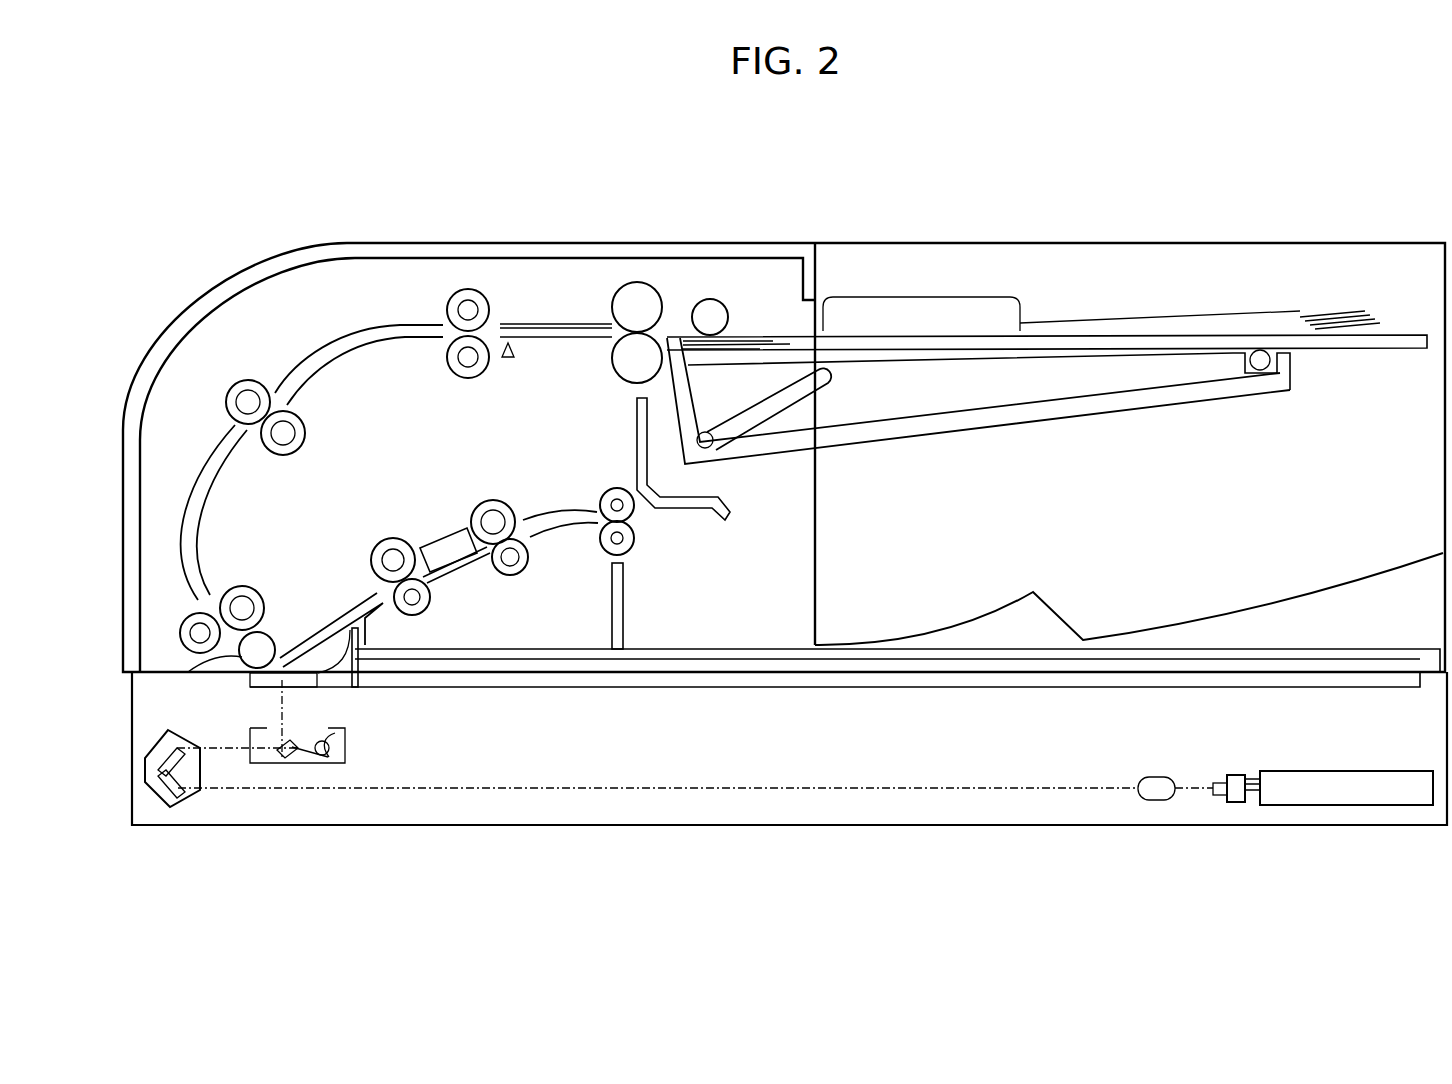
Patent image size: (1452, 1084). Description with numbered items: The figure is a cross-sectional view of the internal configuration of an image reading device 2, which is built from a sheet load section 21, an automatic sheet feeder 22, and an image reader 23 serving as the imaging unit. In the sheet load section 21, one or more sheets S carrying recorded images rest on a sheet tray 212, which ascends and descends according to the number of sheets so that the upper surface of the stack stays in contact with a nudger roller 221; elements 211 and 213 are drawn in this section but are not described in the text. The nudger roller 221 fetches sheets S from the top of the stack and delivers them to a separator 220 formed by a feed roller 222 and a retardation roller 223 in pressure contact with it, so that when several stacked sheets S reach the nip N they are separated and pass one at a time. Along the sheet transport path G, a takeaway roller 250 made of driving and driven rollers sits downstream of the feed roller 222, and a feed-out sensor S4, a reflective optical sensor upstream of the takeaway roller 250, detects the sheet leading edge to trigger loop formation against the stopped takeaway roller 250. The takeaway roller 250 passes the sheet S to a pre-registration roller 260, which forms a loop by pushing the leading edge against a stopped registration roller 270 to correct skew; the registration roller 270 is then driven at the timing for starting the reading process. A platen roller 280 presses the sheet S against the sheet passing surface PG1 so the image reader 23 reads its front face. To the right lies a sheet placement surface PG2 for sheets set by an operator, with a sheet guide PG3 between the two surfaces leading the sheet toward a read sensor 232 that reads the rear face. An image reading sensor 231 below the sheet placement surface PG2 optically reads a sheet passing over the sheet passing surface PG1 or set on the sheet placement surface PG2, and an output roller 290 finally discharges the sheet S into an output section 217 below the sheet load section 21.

The image reading device 2 is at (190, 262).
The sheet load section 21 is at (886, 282).
The automatic sheet feeder 22 is at (473, 447).
The image reader 23 is at (728, 752).
The tray arm 211 is at (1000, 422).
The sheet tray 212 is at (1080, 353).
The lifting arm 213 is at (687, 403).
The output section 217 is at (1217, 635).
The separator 220 is at (633, 317).
The nudger roller 221 is at (713, 305).
The feed roller 222 is at (637, 300).
The retardation roller 223 is at (630, 358).
The image reading sensor 231 is at (1238, 790).
The read sensor 232 is at (455, 545).
The takeaway roller 250 is at (443, 296).
The pre-registration roller 260 is at (226, 421).
The registration roller 270 is at (217, 584).
The platen roller 280 is at (255, 647).
The output roller 290 is at (640, 523).
The sheet S is at (1022, 333).
The nip N is at (654, 328).
The sheet transport path G is at (568, 323).
The feed-out sensor S4 is at (515, 366).
The sheet passing surface PG1 is at (273, 673).
The sheet placement surface PG2 is at (697, 676).
The sheet guide PG3 is at (375, 633).